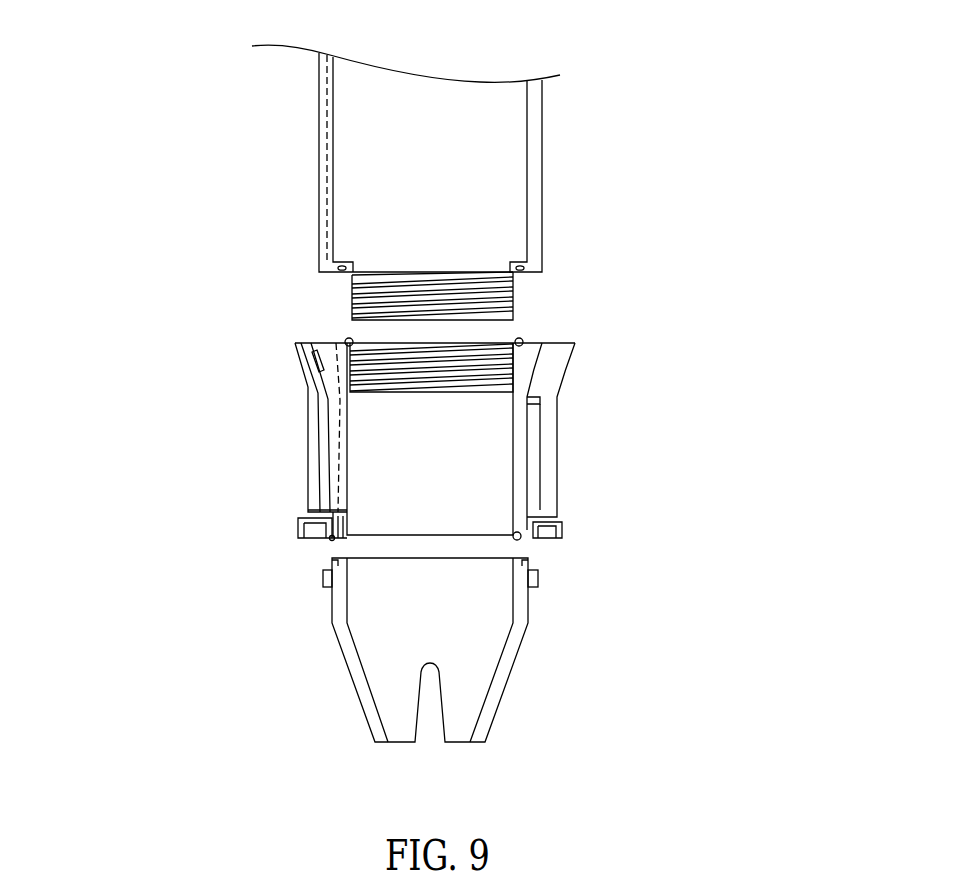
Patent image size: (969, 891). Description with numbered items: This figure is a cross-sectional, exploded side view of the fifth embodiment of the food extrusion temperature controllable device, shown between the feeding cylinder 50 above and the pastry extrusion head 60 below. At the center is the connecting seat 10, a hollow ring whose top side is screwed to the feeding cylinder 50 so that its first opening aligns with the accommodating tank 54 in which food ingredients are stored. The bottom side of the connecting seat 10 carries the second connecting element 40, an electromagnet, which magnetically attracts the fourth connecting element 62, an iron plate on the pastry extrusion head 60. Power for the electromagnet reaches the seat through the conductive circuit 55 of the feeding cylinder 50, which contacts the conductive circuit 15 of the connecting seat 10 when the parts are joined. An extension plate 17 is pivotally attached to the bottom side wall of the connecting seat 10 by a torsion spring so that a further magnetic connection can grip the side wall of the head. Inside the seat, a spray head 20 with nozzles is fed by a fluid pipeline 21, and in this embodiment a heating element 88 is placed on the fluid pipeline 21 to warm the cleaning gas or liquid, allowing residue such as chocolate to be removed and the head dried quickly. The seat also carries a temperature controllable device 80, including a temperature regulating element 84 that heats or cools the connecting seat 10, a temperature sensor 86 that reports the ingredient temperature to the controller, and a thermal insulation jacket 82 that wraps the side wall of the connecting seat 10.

The connecting seat 10 is at (522, 415).
The conductive circuit 15 is at (333, 515).
The extension plate 17 is at (563, 517).
The spray head 20 is at (307, 510).
The fluid pipeline 21 is at (298, 343).
The second connecting element 40 is at (293, 527).
The feeding cylinder 50 is at (540, 178).
The accommodating tank 54 is at (361, 112).
The conductive circuit 55 is at (320, 150).
The pastry extrusion head 60 is at (513, 668).
The fourth connecting element 62 is at (325, 578).
The temperature controllable device 80 is at (448, 403).
The thermal insulation jacket 82 is at (567, 345).
The temperature regulating element 84 is at (533, 493).
The temperature sensor 86 is at (533, 400).
The heating element 88 is at (303, 377).